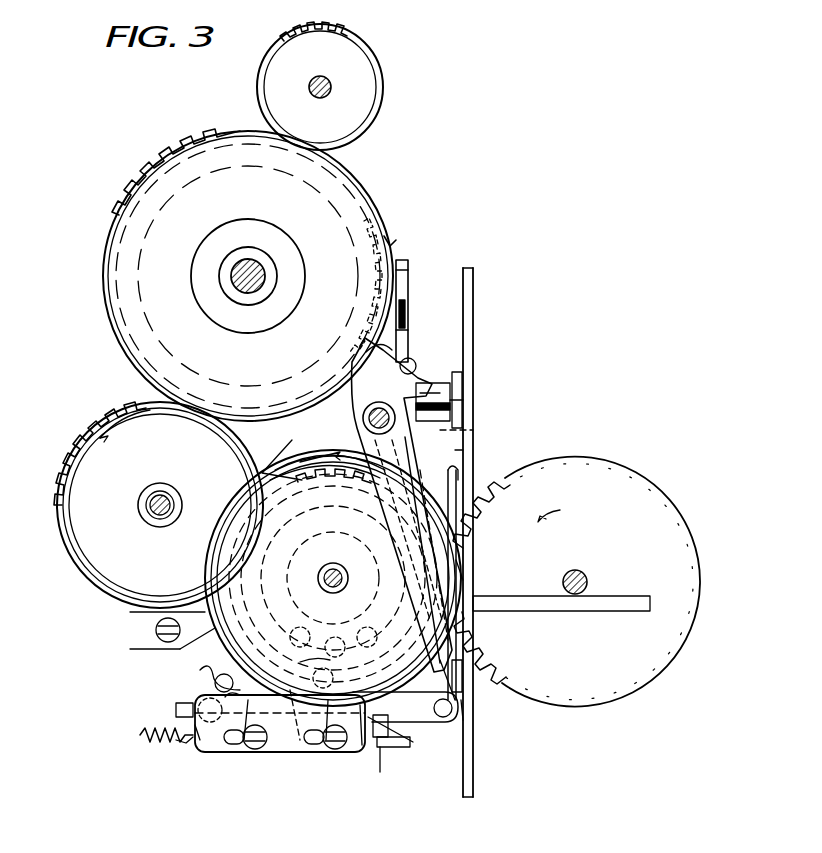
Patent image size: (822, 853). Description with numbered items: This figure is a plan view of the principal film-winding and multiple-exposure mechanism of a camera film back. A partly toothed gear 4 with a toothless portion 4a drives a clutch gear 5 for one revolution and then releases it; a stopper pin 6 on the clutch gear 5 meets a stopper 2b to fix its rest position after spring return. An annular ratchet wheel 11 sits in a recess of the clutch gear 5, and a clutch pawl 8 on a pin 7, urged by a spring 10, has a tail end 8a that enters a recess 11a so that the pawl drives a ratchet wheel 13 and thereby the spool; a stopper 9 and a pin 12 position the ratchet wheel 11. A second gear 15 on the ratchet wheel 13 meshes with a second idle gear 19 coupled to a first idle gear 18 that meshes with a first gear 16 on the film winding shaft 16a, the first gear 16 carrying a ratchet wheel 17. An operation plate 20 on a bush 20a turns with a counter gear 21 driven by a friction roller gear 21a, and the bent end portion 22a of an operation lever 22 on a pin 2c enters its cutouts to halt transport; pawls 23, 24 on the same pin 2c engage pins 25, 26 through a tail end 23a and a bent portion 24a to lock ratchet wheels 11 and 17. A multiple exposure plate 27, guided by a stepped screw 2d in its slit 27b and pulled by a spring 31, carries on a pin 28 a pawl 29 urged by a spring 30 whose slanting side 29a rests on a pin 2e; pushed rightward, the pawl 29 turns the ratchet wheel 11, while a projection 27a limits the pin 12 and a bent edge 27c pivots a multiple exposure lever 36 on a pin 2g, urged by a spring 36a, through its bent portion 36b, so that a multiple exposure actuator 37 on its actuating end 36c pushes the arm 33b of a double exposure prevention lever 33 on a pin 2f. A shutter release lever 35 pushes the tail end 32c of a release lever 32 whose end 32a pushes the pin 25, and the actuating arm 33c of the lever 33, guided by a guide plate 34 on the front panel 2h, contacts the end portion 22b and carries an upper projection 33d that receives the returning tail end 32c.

The stopper 2b is at (200, 620).
The pin 2c is at (362, 430).
The stepped screw 2d is at (256, 750).
The pin 2e is at (214, 683).
The pin 2f is at (440, 396).
The pin 2g is at (380, 740).
The front panel 2h is at (474, 775).
The partly toothed gear 4 is at (605, 690).
The toothless portion 4a is at (478, 620).
The clutch gear 5 is at (214, 661).
The stopper pin 6 is at (248, 580).
The pin 7 is at (350, 543).
The clutch pawl 8 is at (380, 550).
The tail end 8a is at (372, 518).
The stopper 9 is at (288, 715).
The spring 10 is at (333, 578).
The ratchet wheel 11 is at (262, 492).
The recess 11a is at (335, 505).
The pin 12 is at (290, 757).
The ratchet wheel 13 is at (300, 545).
The second gear 15 is at (237, 535).
The first gear 16 is at (106, 242).
The film winding shaft 16a is at (240, 262).
The ratchet wheel 17 is at (134, 293).
The first idle gear 18 is at (93, 440).
The second idle gear 19 is at (68, 478).
The operation plate 20 is at (360, 200).
The bush 20a is at (388, 236).
The counter gear 21 is at (164, 158).
The friction roller gear 21a is at (384, 75).
The operation lever 22 is at (400, 325).
The bent end portion 22a is at (408, 262).
The end portion 22b is at (458, 420).
The pawl 23 is at (363, 418).
The tail end 23a is at (430, 385).
The pawl 24 is at (405, 258).
The bent portion 24a is at (408, 305).
The pin 25 is at (411, 358).
The pin 26 is at (408, 272).
The multiple exposure plate 27 is at (275, 752).
The projection 27a is at (349, 663).
The slit 27b is at (240, 748).
The bent edge 27c is at (364, 752).
The pin 28 is at (200, 752).
The pawl 29 is at (240, 760).
The slanting side 29a is at (207, 698).
The spring 30 is at (178, 742).
The pulling spring 31 is at (140, 735).
The release lever 32 is at (440, 448).
The end 32a is at (387, 340).
The tail end 32c is at (458, 700).
The double exposure prevention lever 33 is at (465, 432).
The arm 33b is at (456, 402).
The actuating arm 33c is at (474, 580).
The upper projection 33d is at (462, 680).
The guide plate 34 is at (468, 480).
The shutter release lever 35 is at (614, 596).
The multiple exposure lever 36 is at (420, 722).
The spring 36a is at (400, 750).
The bent portion 36b is at (382, 775).
The actuating end 36c is at (463, 720).
The multiple exposure actuator 37 is at (499, 440).